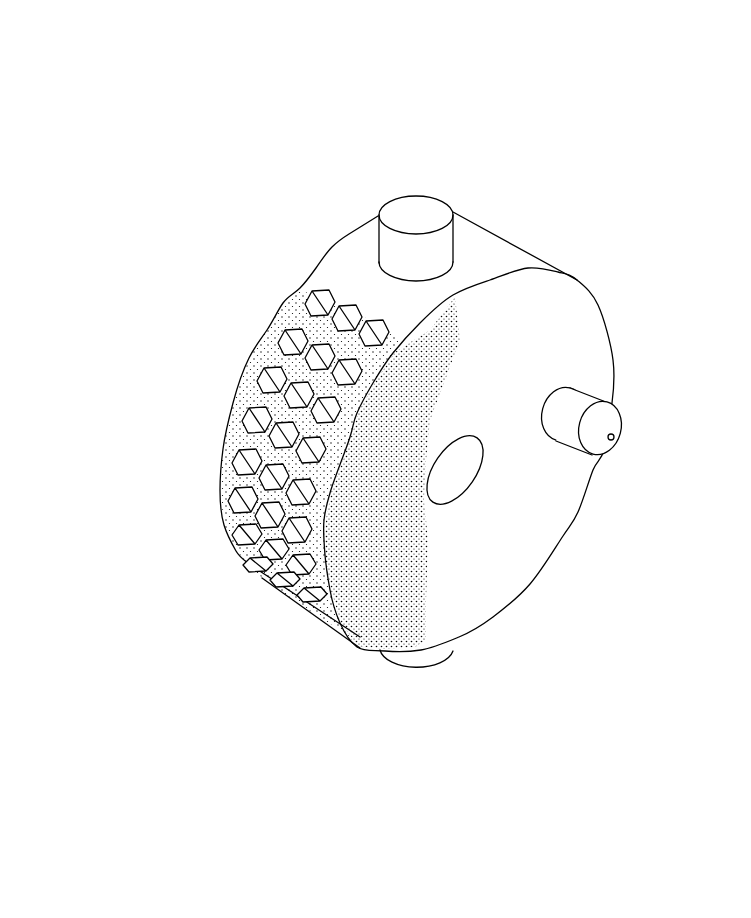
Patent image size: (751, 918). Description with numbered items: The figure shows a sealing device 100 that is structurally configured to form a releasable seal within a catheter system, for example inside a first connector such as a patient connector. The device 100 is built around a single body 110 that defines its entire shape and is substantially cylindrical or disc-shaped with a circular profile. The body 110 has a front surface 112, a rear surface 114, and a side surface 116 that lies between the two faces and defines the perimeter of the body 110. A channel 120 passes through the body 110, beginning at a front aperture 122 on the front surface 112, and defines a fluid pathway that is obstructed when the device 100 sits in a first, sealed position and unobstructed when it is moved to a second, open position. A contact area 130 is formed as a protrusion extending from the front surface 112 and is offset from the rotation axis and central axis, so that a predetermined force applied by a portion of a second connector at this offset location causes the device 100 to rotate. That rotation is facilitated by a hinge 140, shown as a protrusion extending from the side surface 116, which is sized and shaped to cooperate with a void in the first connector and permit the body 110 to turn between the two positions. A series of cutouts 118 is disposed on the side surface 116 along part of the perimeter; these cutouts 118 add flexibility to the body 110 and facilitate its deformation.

The device 100 is at (307, 117).
The body 110 is at (603, 270).
The front surface 112 is at (540, 520).
The rear surface 114 is at (262, 344).
The side surface 116 is at (352, 283).
The cutouts 118 is at (249, 426).
The channel 120 is at (464, 501).
The front aperture 122 is at (466, 470).
The contact area 130 is at (605, 418).
The hinge 140 is at (428, 207).